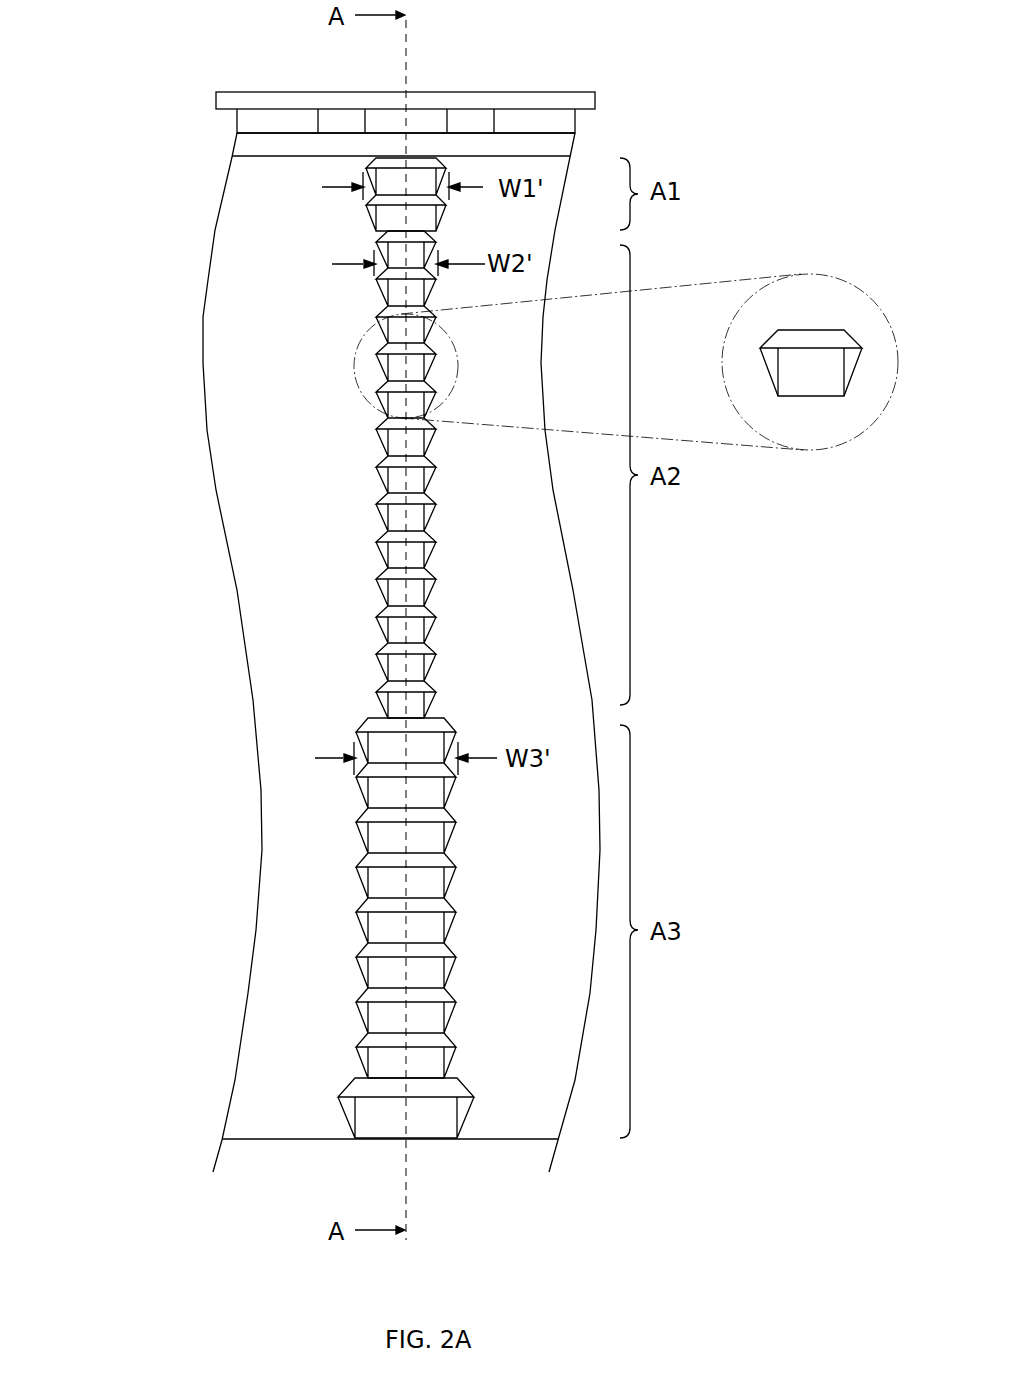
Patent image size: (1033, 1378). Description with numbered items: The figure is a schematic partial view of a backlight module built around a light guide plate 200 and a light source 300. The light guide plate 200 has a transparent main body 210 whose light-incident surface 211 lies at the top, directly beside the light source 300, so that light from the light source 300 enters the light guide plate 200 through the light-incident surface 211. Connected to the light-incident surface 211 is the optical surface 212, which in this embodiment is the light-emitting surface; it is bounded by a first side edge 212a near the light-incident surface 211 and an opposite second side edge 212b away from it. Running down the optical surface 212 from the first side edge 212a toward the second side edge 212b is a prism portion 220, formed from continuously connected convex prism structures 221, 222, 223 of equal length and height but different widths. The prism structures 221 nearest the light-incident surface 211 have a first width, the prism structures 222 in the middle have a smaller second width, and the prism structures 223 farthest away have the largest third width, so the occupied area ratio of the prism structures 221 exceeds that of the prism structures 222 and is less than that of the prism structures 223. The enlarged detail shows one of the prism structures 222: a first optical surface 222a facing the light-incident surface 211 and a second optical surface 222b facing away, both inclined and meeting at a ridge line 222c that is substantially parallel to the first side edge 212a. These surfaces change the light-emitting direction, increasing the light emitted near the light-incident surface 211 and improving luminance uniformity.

The light guide plate 200 is at (198, 183).
The main body 210 is at (240, 237).
The light-incident surface 211 is at (466, 143).
The optical surface 212 is at (270, 998).
The first side edge 212a is at (270, 152).
The second side edge 212b is at (505, 1140).
The prism portion 220 is at (100, 293).
The prism structures 221 is at (390, 219).
The prism structures 222 is at (397, 297).
The first optical surface 222a is at (812, 337).
The second optical surface 222b is at (812, 382).
The ridge line 222c is at (823, 347).
The prism structures 223 is at (392, 744).
The light source 300 is at (535, 122).